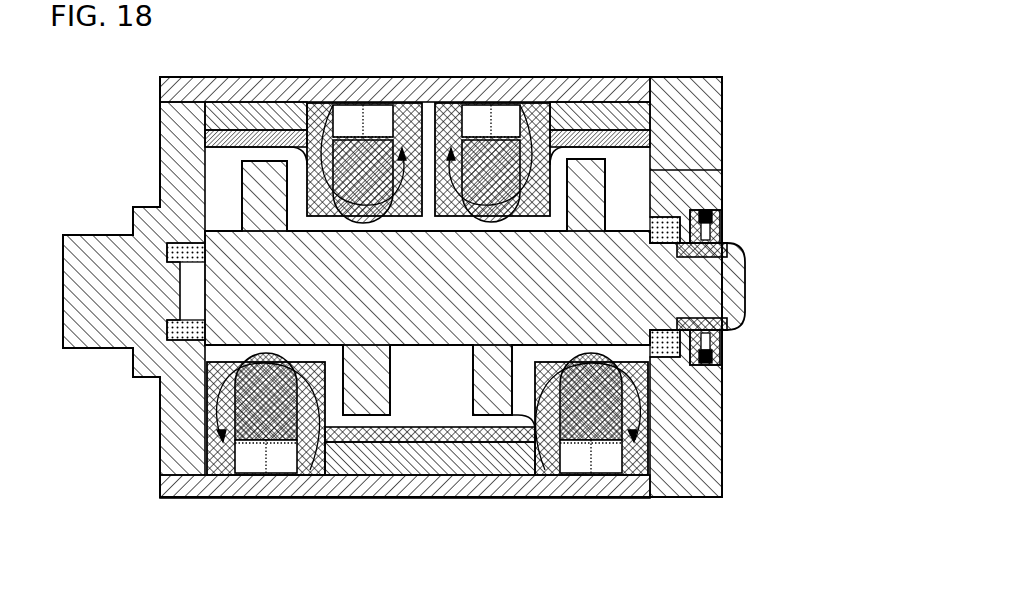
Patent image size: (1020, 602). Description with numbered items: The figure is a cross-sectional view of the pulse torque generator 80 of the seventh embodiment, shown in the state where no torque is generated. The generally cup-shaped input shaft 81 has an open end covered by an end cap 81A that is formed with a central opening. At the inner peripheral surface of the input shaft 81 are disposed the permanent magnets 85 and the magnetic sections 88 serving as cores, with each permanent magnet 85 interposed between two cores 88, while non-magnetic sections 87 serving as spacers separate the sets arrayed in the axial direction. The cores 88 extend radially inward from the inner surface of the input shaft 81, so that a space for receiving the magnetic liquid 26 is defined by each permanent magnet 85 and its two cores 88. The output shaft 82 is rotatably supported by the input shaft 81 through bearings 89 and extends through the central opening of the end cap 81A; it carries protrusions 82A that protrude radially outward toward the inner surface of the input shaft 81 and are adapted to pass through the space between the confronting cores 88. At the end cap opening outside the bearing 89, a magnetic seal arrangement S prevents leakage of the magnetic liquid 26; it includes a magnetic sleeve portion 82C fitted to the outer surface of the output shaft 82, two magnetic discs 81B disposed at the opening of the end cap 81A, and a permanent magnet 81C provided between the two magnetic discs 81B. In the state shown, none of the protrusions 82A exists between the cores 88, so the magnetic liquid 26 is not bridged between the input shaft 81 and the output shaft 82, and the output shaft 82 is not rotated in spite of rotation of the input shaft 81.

The pulse torque generator 80 is at (806, 119).
The input shaft 81 is at (158, 160).
The end cap 81A is at (683, 107).
The magnetic disc 81B is at (720, 340).
The permanent magnet 81C is at (720, 212).
The output shaft 82 is at (165, 415).
The protrusion 82A is at (250, 183).
The magnetic sleeve portion 82C is at (720, 232).
The permanent magnet 85 is at (370, 103).
The non-magnetic section 87 is at (232, 118).
The magnetic section 88 is at (317, 103).
The bearing 89 is at (133, 350).
The magnetic liquid 26 is at (205, 140).
The magnetic seal arrangement S is at (820, 203).